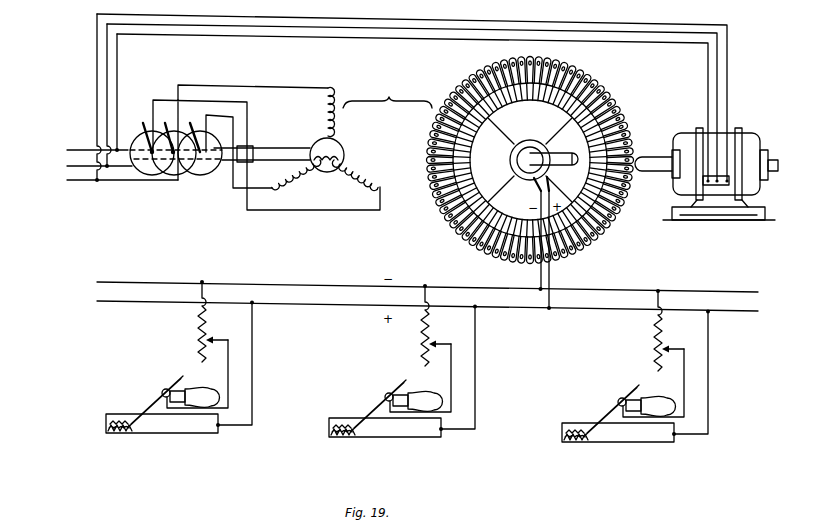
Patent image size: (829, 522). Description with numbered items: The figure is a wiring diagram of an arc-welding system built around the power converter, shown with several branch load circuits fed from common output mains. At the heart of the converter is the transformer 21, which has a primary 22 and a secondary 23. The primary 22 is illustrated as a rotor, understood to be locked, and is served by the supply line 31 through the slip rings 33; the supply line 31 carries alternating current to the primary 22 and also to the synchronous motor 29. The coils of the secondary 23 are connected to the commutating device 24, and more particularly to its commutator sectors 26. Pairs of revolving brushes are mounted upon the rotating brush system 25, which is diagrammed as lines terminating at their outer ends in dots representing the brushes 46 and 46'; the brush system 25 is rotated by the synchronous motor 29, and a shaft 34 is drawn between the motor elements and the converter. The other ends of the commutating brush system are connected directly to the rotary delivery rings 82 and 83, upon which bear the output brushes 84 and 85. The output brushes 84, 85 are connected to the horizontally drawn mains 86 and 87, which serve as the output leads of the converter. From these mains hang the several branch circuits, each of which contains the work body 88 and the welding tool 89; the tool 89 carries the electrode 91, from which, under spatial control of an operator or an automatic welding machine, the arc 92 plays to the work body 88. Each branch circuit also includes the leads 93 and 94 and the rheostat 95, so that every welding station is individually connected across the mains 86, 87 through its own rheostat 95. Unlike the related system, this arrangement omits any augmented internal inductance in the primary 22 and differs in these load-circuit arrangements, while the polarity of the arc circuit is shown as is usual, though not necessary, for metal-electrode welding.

The transformer 21 is at (387, 94).
The primary 22 is at (325, 139).
The secondary 23 is at (417, 122).
The commutating device 24 is at (530, 160).
The rotating brush system 25 is at (526, 160).
The commutator sectors 26 is at (470, 155).
The synchronous motor 29 is at (759, 140).
The supply line 31 is at (108, 165).
The slip rings 33 is at (195, 123).
The shaft 34 is at (281, 148).
The brush 46 is at (490, 142).
The brush 46' is at (494, 180).
The rotary delivery ring 82 is at (526, 140).
The rotary delivery ring 83 is at (543, 140).
The output brush 84 is at (550, 181).
The output brush 85 is at (536, 194).
The main 86 is at (509, 306).
The main 87 is at (506, 285).
The work body 88 is at (106, 426).
The welding tool 89 is at (165, 388).
The electrode 91 is at (151, 404).
The arc 92 is at (128, 420).
The lead 93 is at (253, 375).
The lead 94 is at (228, 374).
The rheostat 95 is at (201, 339).